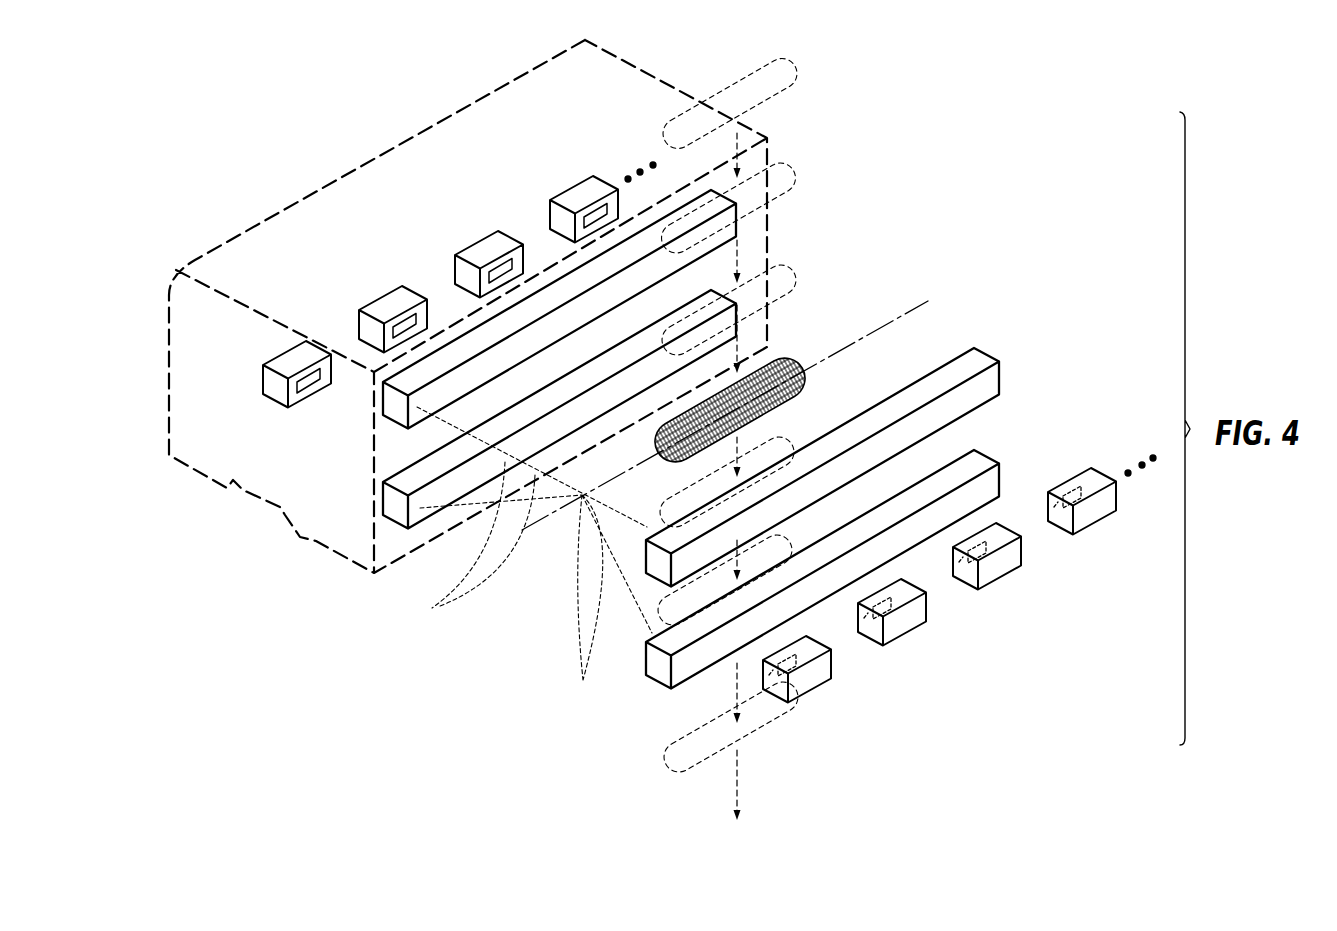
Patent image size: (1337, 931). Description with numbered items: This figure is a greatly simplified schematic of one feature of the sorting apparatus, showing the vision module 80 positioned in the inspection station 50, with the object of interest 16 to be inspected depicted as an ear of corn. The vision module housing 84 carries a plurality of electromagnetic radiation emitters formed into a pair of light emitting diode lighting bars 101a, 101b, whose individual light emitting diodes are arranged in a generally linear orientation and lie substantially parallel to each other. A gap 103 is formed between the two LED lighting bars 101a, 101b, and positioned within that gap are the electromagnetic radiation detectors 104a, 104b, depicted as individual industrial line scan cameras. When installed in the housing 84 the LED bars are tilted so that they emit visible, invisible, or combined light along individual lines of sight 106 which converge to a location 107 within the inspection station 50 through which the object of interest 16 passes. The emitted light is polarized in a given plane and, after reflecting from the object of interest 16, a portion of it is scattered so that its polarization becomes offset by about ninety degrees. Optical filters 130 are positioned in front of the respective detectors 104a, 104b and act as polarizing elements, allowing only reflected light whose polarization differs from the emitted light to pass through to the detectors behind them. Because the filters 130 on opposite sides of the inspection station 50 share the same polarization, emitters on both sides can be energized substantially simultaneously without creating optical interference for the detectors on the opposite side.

The inspection station 50 is at (1040, 120).
The object of interest 16 is at (760, 720).
The vision module 80 is at (712, 50).
The vision module housing 84 is at (393, 143).
The light emitting diode lighting bar 101a is at (645, 353).
The light emitting diode lighting bar 101b is at (965, 468).
The gap 103 is at (400, 448).
The electromagnetic radiation detector 104a is at (573, 190).
The electromagnetic radiation detector 104b is at (1095, 518).
The line of sight 106 is at (520, 557).
The location 107 is at (549, 517).
The optical filter 130 is at (596, 208).